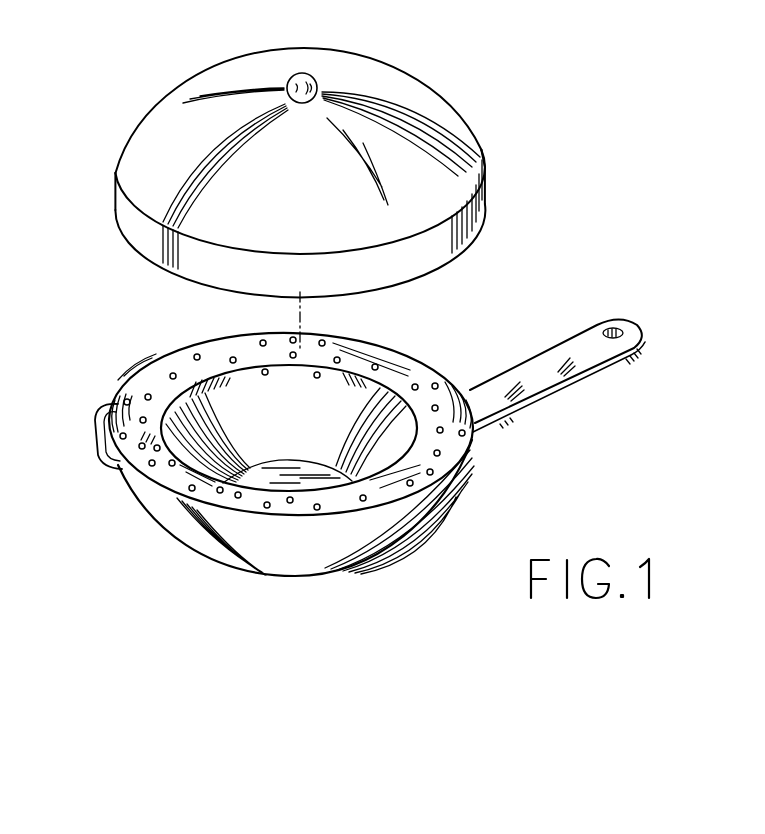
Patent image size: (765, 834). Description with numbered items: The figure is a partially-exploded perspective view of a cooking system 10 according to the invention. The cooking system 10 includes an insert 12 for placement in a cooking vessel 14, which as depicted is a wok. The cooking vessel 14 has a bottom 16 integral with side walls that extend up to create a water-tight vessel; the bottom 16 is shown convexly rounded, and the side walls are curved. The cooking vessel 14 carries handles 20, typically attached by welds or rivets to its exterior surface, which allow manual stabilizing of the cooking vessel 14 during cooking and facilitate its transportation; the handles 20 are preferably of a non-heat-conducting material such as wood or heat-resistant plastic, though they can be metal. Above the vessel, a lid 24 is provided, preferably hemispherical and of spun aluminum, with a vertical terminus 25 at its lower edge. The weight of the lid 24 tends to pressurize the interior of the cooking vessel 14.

The cooking system 10 is at (476, 292).
The insert 12 is at (185, 370).
The cooking vessel 14 is at (178, 513).
The bottom 16 is at (303, 576).
The handles 20 is at (572, 372).
The lid 24 is at (412, 92).
The vertical terminus 25 is at (473, 220).